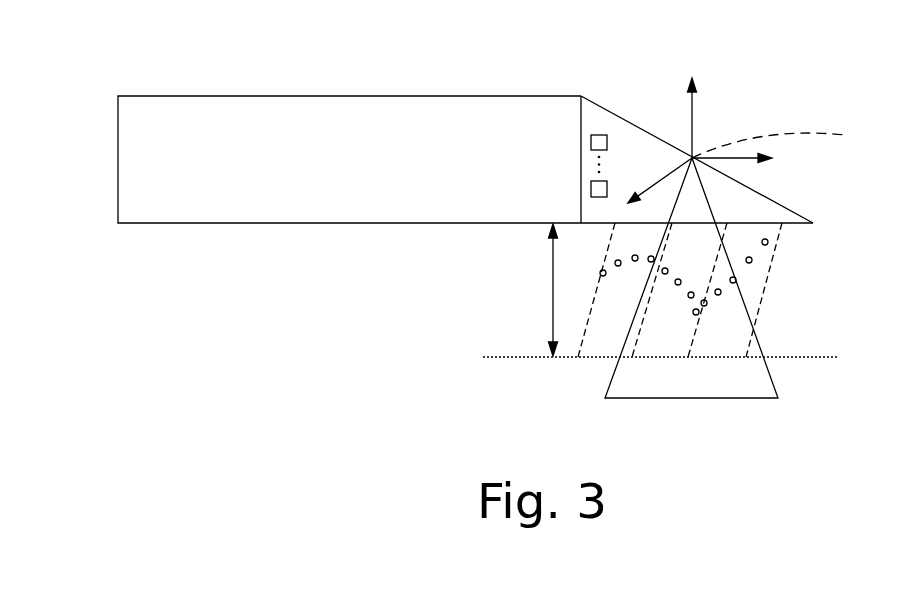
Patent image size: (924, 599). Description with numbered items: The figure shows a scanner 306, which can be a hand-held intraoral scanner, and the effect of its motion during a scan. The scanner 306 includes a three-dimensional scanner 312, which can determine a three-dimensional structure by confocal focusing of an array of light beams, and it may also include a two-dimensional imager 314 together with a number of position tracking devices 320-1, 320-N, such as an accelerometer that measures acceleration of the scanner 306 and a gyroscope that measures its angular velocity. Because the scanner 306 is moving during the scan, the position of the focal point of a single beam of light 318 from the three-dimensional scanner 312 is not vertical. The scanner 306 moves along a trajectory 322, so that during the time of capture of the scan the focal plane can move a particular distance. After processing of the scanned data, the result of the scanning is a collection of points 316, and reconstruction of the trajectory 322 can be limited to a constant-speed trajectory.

The scanner 306 is at (381, 96).
The 3D scanner 312 is at (797, 224).
The 2D imager 314 is at (695, 153).
The collection of points 316 is at (754, 265).
The single beam of light 318 is at (584, 311).
The position tracking device 320-1 is at (591, 142).
The position tracking device 320-N is at (591, 189).
The trajectory 322 is at (833, 126).